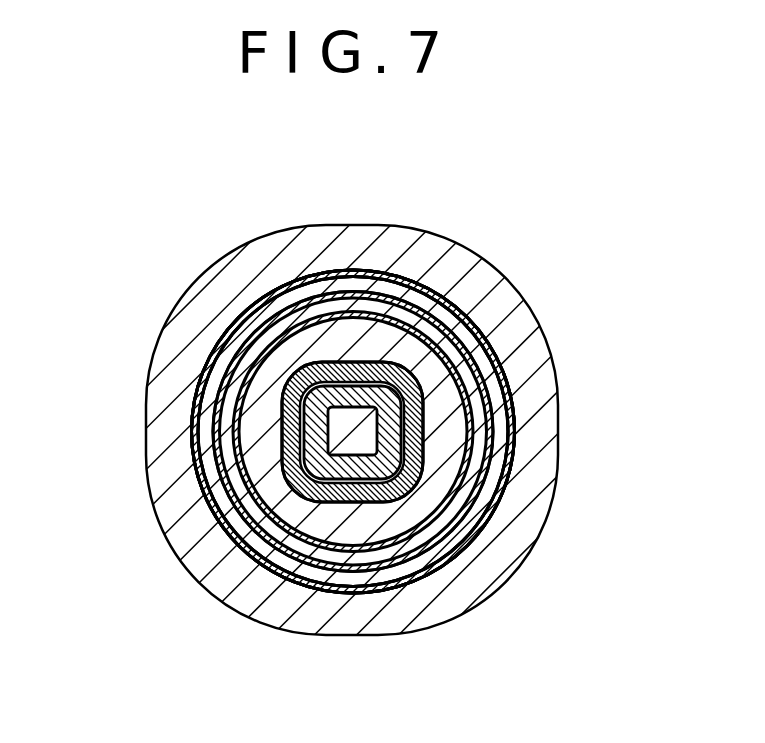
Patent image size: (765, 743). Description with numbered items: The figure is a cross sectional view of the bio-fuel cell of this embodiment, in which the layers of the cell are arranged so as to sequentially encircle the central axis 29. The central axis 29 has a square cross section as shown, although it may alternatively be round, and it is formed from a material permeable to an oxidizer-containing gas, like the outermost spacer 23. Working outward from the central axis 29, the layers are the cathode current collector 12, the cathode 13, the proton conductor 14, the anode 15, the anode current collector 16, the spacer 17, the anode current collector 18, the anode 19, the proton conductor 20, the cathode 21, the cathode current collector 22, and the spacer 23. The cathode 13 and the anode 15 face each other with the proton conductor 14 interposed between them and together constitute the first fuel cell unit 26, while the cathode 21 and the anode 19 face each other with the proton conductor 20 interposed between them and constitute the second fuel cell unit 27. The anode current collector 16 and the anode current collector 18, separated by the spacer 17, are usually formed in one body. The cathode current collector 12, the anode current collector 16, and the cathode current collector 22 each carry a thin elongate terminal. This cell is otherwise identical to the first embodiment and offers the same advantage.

The cathode current collector 12 is at (372, 383).
The cathode 13 is at (386, 406).
The proton conductor 14 is at (455, 322).
The anode 15 is at (495, 325).
The anode current collector 16 is at (490, 357).
The spacer 17 is at (512, 399).
The anode current collector 18 is at (438, 457).
The anode 19 is at (463, 502).
The proton conductor 20 is at (443, 557).
The cathode 21 is at (433, 565).
The cathode current collector 22 is at (340, 588).
The spacer 23 is at (215, 580).
The first fuel cell unit 26 is at (301, 425).
The second fuel cell unit 27 is at (225, 348).
The central axis 29 is at (340, 422).